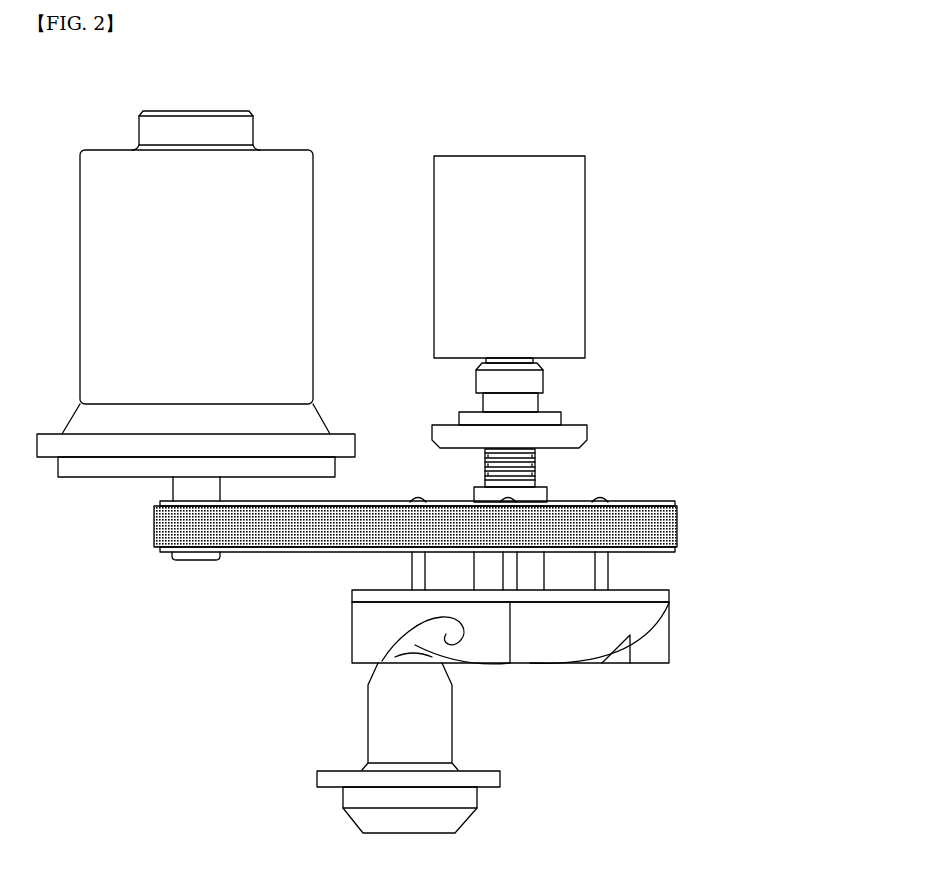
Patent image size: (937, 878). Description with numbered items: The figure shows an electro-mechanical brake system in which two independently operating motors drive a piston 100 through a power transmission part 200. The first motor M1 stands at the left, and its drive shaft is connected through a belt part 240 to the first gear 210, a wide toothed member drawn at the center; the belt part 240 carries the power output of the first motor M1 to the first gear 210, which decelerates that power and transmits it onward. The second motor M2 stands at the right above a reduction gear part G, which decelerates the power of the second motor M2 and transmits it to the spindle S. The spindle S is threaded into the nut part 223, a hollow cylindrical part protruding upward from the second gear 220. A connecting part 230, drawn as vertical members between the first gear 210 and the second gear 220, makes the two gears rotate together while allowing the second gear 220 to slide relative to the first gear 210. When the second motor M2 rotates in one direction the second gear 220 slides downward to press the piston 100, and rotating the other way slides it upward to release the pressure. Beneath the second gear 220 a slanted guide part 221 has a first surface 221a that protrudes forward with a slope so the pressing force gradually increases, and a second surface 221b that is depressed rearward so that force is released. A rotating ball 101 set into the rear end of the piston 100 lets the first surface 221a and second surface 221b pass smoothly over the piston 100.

The first motor M1 is at (297, 246).
The second motor M2 is at (570, 246).
The reduction gear part G is at (578, 406).
The spindle S is at (485, 474).
The nut part 223 is at (538, 497).
The first gear 210 is at (674, 491).
The connecting part 230 is at (625, 575).
The second gear 220 is at (688, 603).
The power transmission part 200 is at (775, 468).
The guide part 221 is at (237, 638).
The first surface 221a is at (510, 603).
The second surface 221b is at (350, 628).
The rotating ball 101 is at (415, 657).
The piston 100 is at (474, 745).
The belt part 240 is at (262, 534).